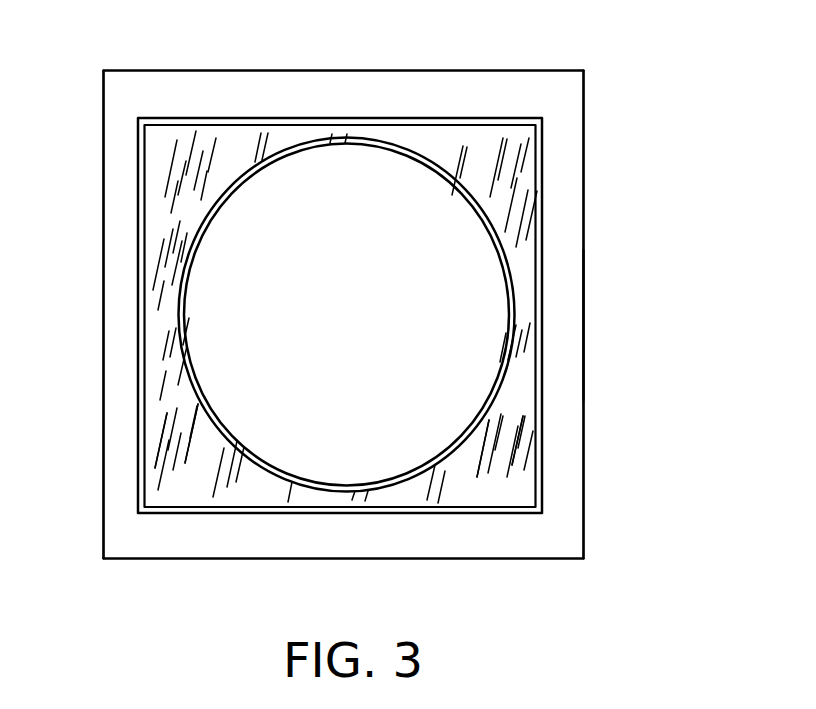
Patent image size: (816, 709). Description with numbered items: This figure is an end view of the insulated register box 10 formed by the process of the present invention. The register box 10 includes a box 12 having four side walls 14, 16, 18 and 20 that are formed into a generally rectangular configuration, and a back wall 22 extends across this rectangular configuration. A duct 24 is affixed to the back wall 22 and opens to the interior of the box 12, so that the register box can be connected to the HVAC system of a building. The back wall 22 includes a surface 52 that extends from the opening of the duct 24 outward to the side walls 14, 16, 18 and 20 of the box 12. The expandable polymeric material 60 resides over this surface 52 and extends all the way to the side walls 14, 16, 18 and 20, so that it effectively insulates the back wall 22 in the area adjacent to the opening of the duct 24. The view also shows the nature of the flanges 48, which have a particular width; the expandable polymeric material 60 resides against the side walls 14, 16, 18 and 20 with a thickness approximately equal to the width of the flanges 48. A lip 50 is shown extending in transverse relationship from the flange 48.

The insulated register box 10 is at (636, 50).
The box 12 is at (583, 137).
The side wall 14 is at (583, 383).
The side wall 16 is at (405, 560).
The side wall 18 is at (103, 313).
The side wall 20 is at (497, 70).
The back wall 22 is at (155, 415).
The duct 24 is at (222, 203).
The flanges 48 is at (583, 308).
The lip 50 is at (158, 232).
The surface 52 is at (188, 492).
The expandable polymeric material 60 is at (510, 452).